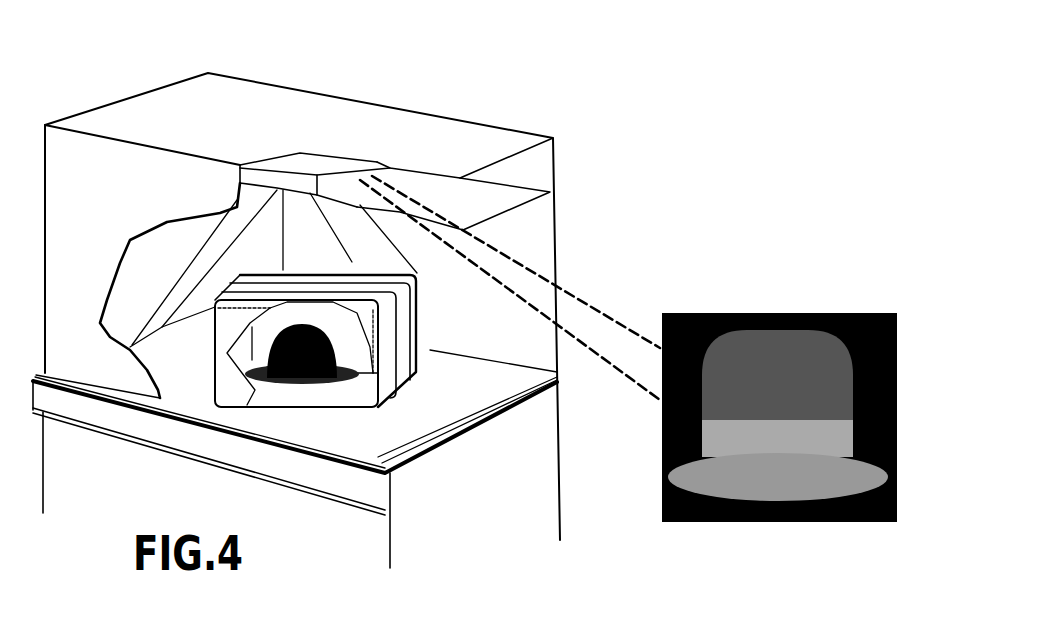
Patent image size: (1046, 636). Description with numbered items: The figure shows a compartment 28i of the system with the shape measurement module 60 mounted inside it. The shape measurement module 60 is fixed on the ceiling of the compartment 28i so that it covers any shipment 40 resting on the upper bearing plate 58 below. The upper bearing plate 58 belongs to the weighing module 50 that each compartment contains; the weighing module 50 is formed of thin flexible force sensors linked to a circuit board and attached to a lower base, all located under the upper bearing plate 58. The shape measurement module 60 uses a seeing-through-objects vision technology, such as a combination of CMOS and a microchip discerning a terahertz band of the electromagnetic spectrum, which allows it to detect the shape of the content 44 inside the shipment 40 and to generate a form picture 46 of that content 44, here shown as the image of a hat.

The imaging enclosure 28i is at (197, 87).
The shape measurement module 60 is at (267, 175).
The shipment 40 is at (230, 323).
The content 44 is at (303, 388).
The upper bearing plate 58 is at (470, 385).
The weighing module 50 is at (207, 433).
The form picture 46 is at (723, 523).